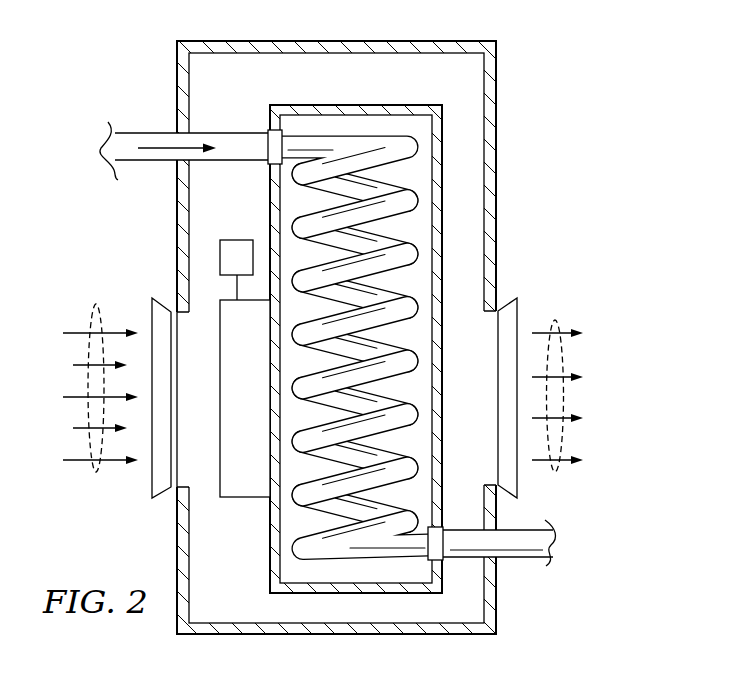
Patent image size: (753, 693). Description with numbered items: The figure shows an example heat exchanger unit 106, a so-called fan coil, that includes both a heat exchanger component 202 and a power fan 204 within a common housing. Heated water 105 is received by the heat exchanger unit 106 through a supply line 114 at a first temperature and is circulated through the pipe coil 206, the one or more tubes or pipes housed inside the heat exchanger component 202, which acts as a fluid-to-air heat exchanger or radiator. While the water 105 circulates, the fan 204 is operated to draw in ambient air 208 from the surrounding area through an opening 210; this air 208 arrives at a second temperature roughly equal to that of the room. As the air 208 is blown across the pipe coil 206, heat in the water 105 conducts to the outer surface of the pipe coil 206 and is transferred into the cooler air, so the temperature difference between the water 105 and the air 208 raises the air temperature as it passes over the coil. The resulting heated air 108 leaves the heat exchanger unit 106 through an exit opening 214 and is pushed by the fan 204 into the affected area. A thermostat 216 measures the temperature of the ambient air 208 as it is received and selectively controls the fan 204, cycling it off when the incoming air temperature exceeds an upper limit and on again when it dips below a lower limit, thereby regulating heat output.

The heated water 105 is at (156, 133).
The heat exchanger unit 106 is at (552, 170).
The heated air 108 is at (556, 320).
The supply line 114 is at (128, 162).
The heat exchanger component 202 is at (371, 105).
The power fan 204 is at (243, 497).
The pipe coil 206 is at (392, 240).
The ambient air 208 is at (95, 320).
The opening 210 is at (160, 477).
The exit opening 214 is at (512, 476).
The thermostat 216 is at (237, 240).